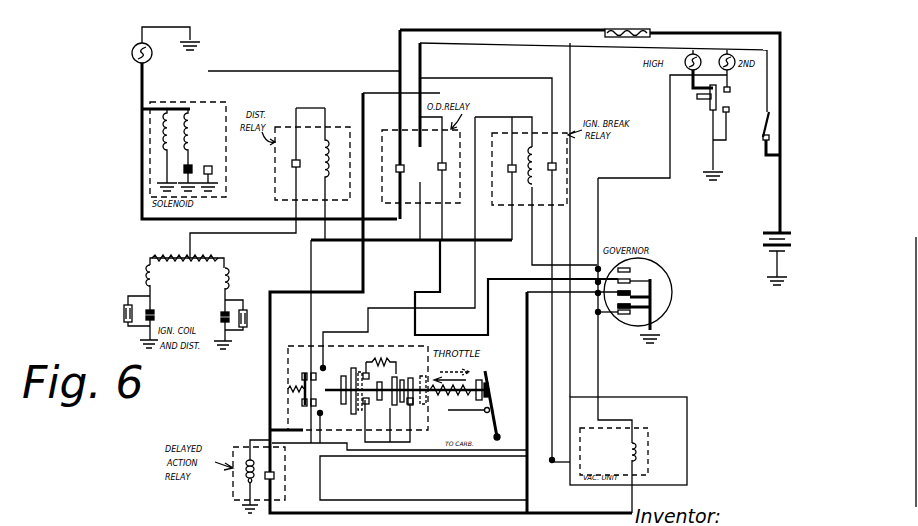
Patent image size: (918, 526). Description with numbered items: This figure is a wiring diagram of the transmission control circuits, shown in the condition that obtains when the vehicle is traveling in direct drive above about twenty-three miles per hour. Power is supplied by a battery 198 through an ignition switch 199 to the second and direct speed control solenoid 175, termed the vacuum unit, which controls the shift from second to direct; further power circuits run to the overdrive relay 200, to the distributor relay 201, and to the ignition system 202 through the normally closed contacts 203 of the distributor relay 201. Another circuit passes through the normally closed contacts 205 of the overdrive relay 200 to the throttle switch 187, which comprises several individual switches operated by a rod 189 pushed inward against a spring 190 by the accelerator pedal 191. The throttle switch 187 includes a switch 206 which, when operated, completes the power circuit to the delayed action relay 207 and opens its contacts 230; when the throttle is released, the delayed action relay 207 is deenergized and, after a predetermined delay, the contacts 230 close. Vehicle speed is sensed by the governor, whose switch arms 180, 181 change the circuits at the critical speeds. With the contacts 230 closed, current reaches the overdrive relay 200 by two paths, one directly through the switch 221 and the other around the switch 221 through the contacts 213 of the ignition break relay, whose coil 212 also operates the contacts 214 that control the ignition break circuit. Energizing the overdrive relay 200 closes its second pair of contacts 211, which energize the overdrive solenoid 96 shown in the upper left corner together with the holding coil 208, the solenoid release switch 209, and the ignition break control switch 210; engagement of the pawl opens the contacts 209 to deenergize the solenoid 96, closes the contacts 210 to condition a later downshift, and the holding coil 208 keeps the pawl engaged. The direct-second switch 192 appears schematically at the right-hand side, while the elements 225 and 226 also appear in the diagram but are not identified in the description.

The overdrive switch 226 is at (136, 62).
The overdrive solenoid 96 is at (190, 112).
The holding coil 208 is at (165, 140).
The solenoid release switch 209 is at (183, 169).
The ignition break control switch 210 is at (214, 170).
The distributor relay 201 is at (327, 138).
The normally closed contacts of distributor relay 203 is at (292, 165).
The second pair of contacts of overdrive relay 211 is at (395, 165).
The normally closed contacts of overdrive relay 205 is at (447, 170).
The ignition break relay coil 212 is at (534, 143).
The ignition break relay contacts 213 is at (512, 173).
The ignition break relay contacts 214 is at (556, 168).
The overdrive relay 200 is at (650, 30).
The high speed switch 225 is at (700, 54).
The direct-second switch 192 is at (703, 100).
The ignition switch 199 is at (760, 128).
The battery 198 is at (762, 236).
The ignition system 202 is at (147, 255).
The governor switch arm 181 is at (641, 296).
The governor switch arm 180 is at (617, 306).
The switch 221 is at (300, 377).
The throttle switch 187 is at (407, 386).
The switch of throttle switch 206 is at (480, 400).
The rod 189 is at (489, 390).
The spring 190 is at (490, 410).
The accelerator pedal 191 is at (492, 376).
The second and direct speed control solenoid 175 is at (636, 452).
The delayed action relay 207 is at (246, 484).
The delayed action relay contacts 230 is at (275, 476).